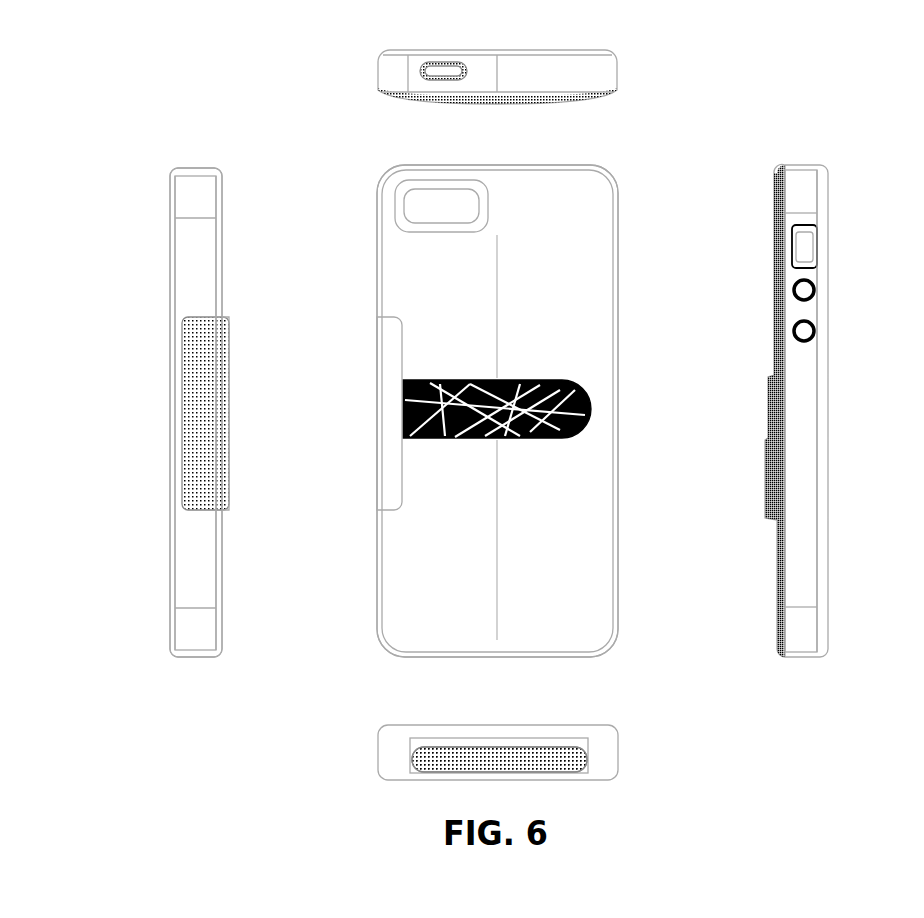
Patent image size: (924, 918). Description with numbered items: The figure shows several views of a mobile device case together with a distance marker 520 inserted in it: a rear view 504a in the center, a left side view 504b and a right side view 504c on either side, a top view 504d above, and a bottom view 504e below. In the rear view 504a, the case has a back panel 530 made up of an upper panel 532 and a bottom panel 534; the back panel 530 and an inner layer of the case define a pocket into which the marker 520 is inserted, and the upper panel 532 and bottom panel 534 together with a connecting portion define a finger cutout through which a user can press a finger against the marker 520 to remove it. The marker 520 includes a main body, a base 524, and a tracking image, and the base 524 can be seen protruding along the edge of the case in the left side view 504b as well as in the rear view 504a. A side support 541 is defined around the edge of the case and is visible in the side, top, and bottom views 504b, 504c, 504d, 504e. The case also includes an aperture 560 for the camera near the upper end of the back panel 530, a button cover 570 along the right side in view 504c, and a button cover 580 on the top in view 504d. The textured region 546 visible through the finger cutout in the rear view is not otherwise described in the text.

The rear view 504a is at (365, 128).
The left side view 504b is at (185, 150).
The right side view 504c is at (786, 150).
The top view 504d is at (360, 61).
The bottom view 504e is at (353, 744).
The distance marker 520 is at (363, 410).
The base 524 is at (573, 392).
The back panel 530 is at (587, 185).
The upper panel 532 is at (582, 290).
The bottom panel 534 is at (573, 502).
The side support 541 is at (583, 72).
The mesh opening 546 is at (597, 411).
The aperture 560 is at (412, 205).
The button cover 570 is at (829, 280).
The button cover 580 is at (447, 78).